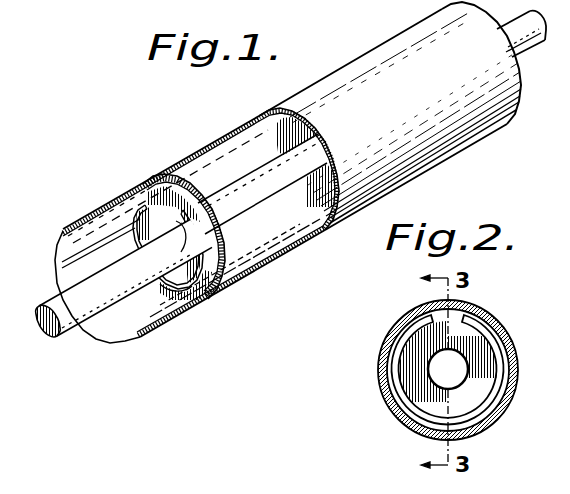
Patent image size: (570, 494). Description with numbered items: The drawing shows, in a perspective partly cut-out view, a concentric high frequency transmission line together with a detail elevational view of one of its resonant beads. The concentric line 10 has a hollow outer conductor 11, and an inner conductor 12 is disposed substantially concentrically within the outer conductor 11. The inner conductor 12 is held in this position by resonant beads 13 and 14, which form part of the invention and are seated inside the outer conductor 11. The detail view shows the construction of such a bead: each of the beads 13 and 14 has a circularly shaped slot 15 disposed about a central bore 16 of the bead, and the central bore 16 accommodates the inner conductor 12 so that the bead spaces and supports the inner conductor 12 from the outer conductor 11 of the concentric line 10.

In FIG. 1, the concentric line 10 is at (452, 145).
In FIG. 1, the hollow outer conductor 11 is at (278, 263).
In FIG. 1, the inner conductor 12 is at (82, 333).
In FIG. 1, the resonant bead 13 is at (244, 283).
In FIG. 2, the resonant bead 13 is at (380, 360).
In FIG. 1, the resonant bead 14 is at (313, 206).
In FIG. 1, the circularly shaped slot 15 is at (120, 200).
In FIG. 2, the circularly shaped slot 15 is at (500, 351).
In FIG. 1, the central bore 16 is at (188, 283).
In FIG. 2, the central bore 16 is at (436, 382).